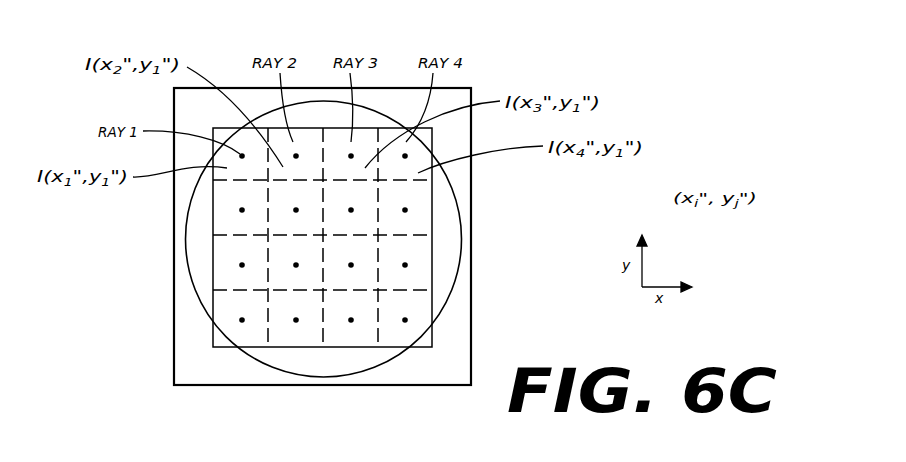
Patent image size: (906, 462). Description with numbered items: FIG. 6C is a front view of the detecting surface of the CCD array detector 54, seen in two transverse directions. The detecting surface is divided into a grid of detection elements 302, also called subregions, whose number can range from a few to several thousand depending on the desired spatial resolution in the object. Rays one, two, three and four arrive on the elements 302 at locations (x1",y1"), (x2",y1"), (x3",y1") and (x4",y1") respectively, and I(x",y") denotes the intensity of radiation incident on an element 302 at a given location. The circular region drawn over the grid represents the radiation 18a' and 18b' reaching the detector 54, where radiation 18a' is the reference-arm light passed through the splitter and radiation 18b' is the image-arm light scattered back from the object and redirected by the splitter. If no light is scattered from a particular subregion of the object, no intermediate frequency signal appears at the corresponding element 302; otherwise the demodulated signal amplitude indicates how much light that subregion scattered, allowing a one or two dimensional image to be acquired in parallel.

The CCD array detector 54 is at (155, 204).
The detection elements 302 is at (362, 248).
The reference radiation toward detector 18a' is at (409, 239).
The image radiation toward detector 18b' is at (409, 239).